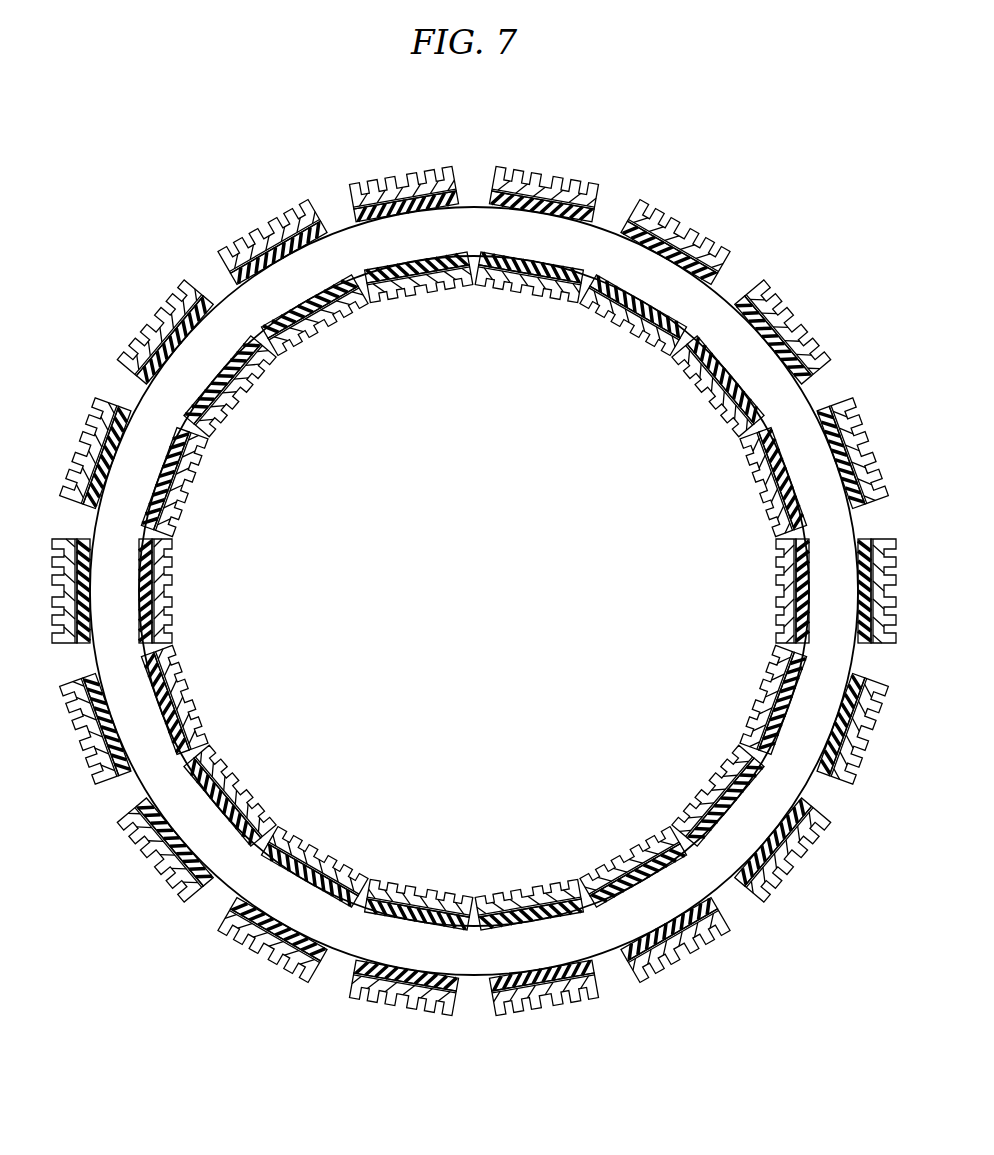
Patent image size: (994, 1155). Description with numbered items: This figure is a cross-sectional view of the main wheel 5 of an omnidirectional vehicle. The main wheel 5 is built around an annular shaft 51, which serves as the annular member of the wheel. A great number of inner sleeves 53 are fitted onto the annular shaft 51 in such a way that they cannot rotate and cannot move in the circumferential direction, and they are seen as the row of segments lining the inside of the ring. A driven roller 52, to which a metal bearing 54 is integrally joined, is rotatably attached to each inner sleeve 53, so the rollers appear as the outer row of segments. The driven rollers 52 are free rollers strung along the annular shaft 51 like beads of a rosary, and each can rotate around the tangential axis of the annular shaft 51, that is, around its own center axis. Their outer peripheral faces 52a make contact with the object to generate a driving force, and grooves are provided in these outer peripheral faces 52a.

The main wheel 5 is at (713, 162).
The annular shaft 51 is at (705, 310).
The driven roller 52 is at (545, 176).
The outer peripheral face 52a is at (252, 968).
The inner sleeve 53 is at (417, 268).
The metal bearing 54 is at (404, 164).